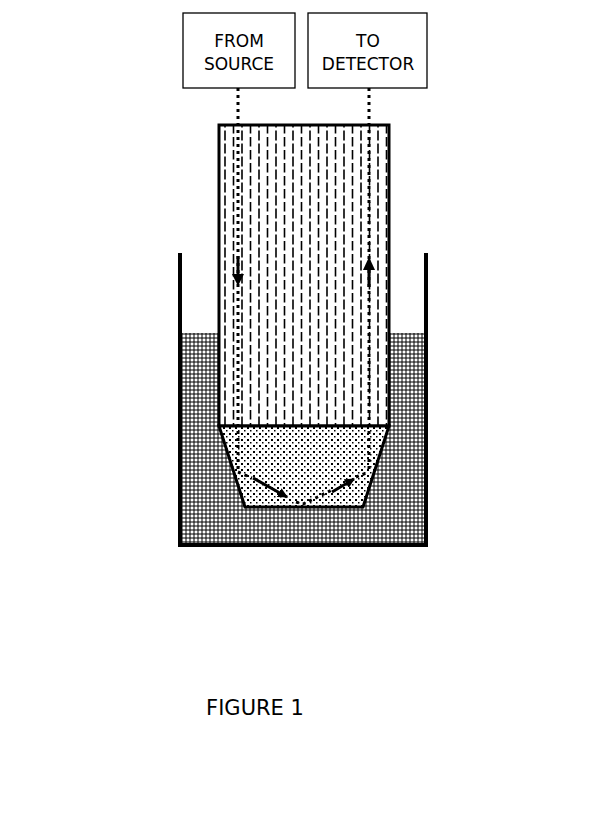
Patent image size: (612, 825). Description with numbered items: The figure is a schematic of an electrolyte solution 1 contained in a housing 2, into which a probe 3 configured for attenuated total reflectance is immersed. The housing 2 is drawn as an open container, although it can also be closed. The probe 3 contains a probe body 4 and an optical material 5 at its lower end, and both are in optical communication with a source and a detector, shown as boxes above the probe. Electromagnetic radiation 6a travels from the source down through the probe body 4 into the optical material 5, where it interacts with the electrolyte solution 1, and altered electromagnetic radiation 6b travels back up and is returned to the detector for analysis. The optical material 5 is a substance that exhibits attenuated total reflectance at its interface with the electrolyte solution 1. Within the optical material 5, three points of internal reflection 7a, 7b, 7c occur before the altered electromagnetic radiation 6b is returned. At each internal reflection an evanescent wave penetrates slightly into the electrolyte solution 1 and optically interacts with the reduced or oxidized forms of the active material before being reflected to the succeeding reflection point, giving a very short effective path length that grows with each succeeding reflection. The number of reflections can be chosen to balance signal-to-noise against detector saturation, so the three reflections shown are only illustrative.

The electrolyte solution 1 is at (407, 525).
The housing 2 is at (428, 477).
The probe 3 is at (290, 365).
The probe body 4 is at (389, 142).
The optical material 5 is at (385, 443).
The electromagnetic radiation 6a is at (238, 205).
The altered electromagnetic radiation 6b is at (371, 210).
The point of internal reflection 7a is at (237, 485).
The point of internal reflection 7b is at (305, 507).
The point of internal reflection 7c is at (365, 488).